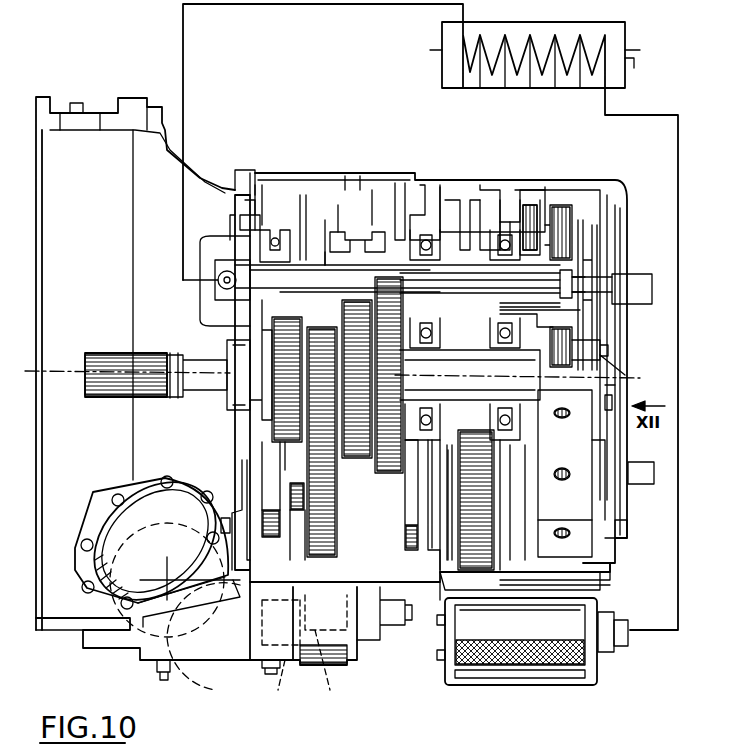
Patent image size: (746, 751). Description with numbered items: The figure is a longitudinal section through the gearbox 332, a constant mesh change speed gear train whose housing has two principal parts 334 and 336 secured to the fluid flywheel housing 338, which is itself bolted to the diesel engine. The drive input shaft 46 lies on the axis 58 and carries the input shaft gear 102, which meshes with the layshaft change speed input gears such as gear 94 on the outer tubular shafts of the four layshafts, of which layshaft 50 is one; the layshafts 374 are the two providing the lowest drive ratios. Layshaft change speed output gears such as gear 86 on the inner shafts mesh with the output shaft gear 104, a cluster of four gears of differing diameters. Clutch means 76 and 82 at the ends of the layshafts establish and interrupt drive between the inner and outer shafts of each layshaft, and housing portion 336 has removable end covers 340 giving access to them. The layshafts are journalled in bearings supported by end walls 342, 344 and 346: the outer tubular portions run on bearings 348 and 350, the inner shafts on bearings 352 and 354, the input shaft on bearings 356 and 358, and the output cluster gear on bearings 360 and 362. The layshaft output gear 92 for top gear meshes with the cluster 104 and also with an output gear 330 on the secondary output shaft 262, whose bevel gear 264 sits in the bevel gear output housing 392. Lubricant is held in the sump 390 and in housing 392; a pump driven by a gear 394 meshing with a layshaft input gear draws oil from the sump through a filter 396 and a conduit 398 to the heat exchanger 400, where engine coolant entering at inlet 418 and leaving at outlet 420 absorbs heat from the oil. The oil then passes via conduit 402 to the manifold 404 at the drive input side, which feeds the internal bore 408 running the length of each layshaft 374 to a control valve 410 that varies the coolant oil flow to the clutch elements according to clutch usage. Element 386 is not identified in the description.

The fluid flywheel housing 338 is at (110, 136).
The conduit 402 is at (272, 8).
The heat exchanger 400 is at (612, 94).
The inlet 418 is at (430, 52).
The outlet 420 is at (636, 68).
The removable end covers 340 is at (628, 190).
The gearbox 332 is at (622, 165).
The housing portion 336 is at (548, 183).
The end wall 344 is at (470, 200).
The bearing 348 is at (485, 200).
The layshaft change speed input gear 94 is at (495, 212).
The end wall 346 is at (505, 225).
The bearing 350 is at (535, 200).
The control valve 410 is at (590, 250).
The terminal 386 is at (630, 262).
The clutch means 76 is at (608, 356).
The bearing 362 is at (356, 288).
The manifold 404 is at (210, 290).
The bearing 356 is at (378, 235).
The internal bore 408 is at (278, 230).
The bearing 352 is at (252, 200).
The end wall 342 is at (262, 188).
The layshafts 374 is at (303, 195).
The layshaft change speed output gear 86 is at (328, 220).
The housing portion 334 is at (352, 176).
The layshaft 50 is at (372, 192).
The bearing 354 is at (400, 200).
The axis 58 is at (62, 368).
The drive input shaft 46 is at (175, 355).
The bearing 360 is at (233, 345).
The output shaft gear 104 is at (356, 468).
The layshaft output gear 92 is at (336, 468).
The input shaft gear 102 is at (475, 330).
The bearing 358 is at (520, 428).
The bevel gear output housing 392 is at (352, 662).
The bevel gear 264 is at (228, 694).
The secondary output shaft 262 is at (287, 653).
The output gear 330 is at (336, 651).
The clutch means 82 is at (593, 565).
The sump 390 is at (595, 680).
The gear 394 is at (520, 622).
The filter 396 is at (560, 598).
The conduit 398 is at (648, 633).